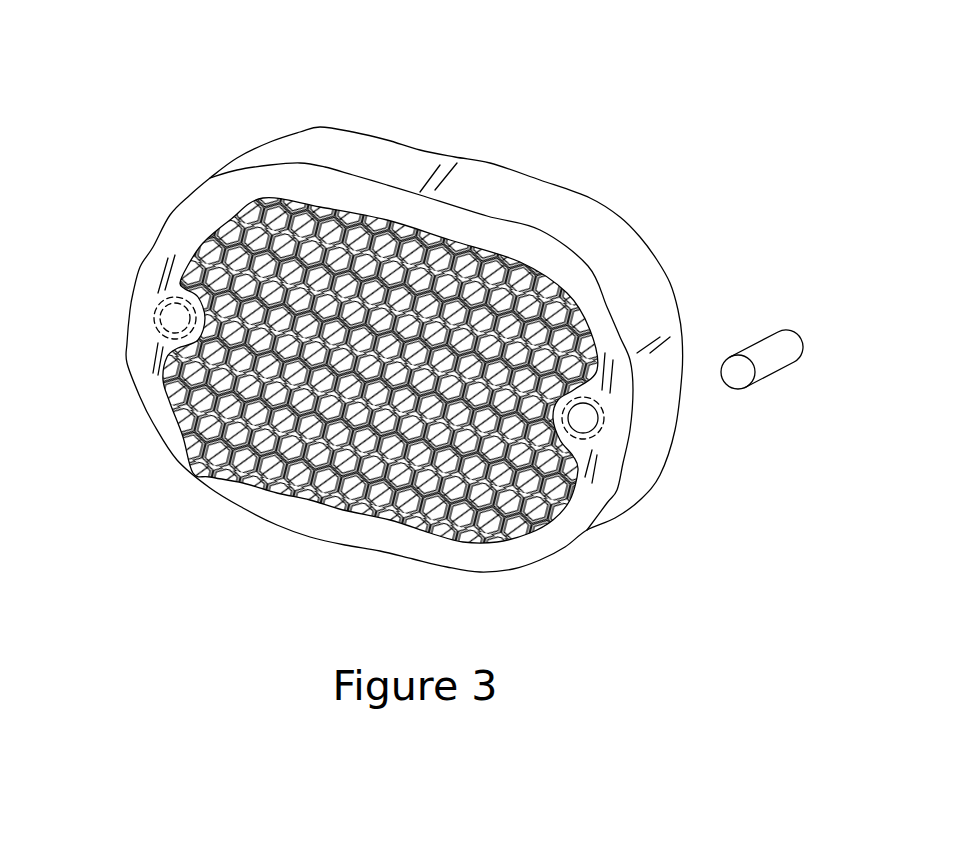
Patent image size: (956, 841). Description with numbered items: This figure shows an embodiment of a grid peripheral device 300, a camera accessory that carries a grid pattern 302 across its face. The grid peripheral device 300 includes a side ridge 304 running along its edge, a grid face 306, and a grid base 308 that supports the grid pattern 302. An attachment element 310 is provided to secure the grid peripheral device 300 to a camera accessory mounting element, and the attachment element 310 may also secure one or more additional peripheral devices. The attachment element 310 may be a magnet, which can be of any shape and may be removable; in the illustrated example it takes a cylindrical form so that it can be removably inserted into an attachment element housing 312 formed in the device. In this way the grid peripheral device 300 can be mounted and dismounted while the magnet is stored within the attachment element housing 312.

The grid peripheral device 300 is at (393, 293).
The grid pattern 302 is at (232, 463).
The side ridge 304 is at (640, 300).
The grid face 306 is at (135, 341).
The grid base 308 is at (441, 349).
The attachment element 310 is at (780, 367).
The attachment element housing 312 is at (588, 421).